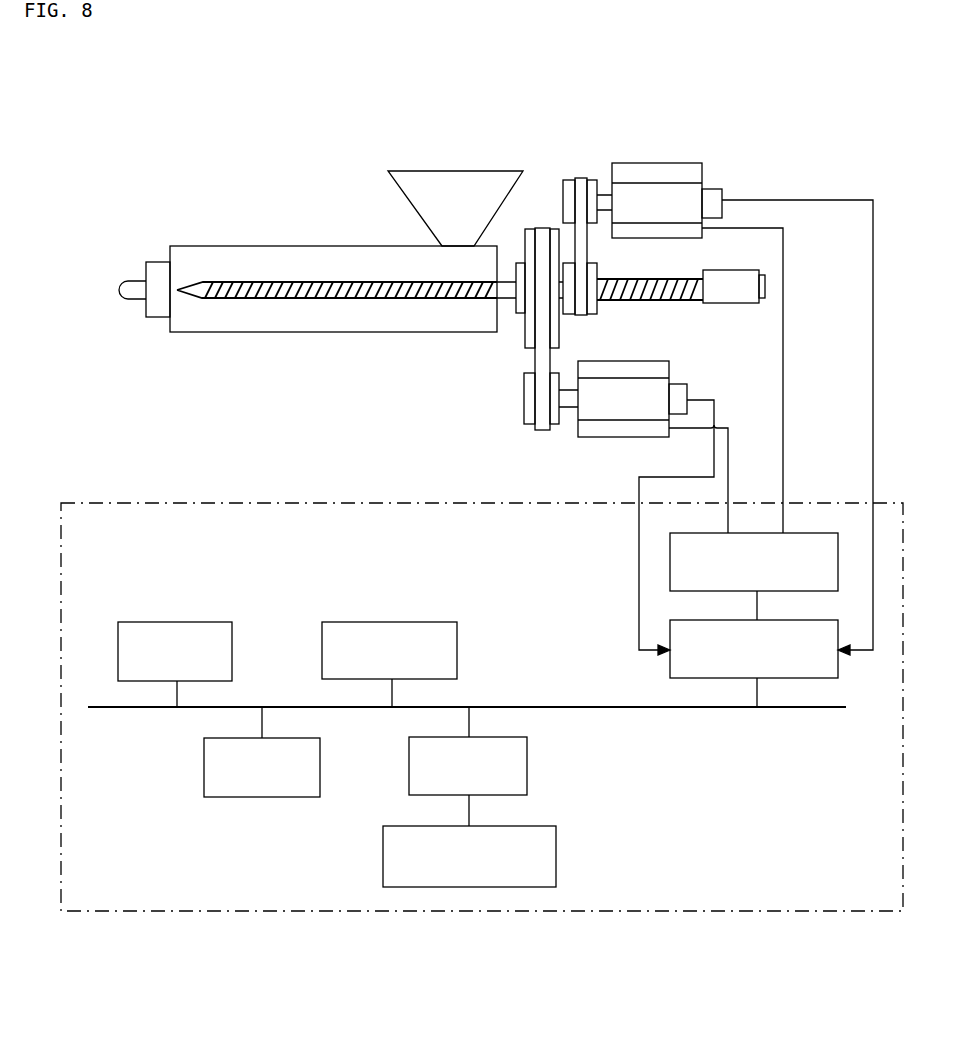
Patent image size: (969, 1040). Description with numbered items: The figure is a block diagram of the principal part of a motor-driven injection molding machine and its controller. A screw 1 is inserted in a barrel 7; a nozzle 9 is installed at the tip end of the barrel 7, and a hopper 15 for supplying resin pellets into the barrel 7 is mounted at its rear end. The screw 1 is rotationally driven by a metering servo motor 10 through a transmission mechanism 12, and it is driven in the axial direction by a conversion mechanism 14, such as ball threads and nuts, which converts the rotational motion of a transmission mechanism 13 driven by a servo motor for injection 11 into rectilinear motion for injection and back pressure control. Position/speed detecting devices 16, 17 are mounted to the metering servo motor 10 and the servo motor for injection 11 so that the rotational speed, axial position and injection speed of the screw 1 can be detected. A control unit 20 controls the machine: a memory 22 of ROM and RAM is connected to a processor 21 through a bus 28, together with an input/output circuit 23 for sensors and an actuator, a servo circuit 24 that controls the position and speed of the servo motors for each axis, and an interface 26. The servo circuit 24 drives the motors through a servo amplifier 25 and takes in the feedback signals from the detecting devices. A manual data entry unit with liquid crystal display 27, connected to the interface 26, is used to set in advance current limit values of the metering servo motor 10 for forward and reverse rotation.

The screw 1 is at (310, 298).
The barrel 7 is at (245, 250).
The nozzle 9 is at (140, 282).
The metering servo motor 10 is at (642, 367).
The servo motor for injection 11 is at (632, 167).
The transmission mechanism 12 is at (522, 372).
The transmission mechanism 13 is at (550, 194).
The conversion mechanism 14 is at (688, 266).
The hopper 15 is at (448, 177).
The position/speed detecting device 16 is at (688, 390).
The position/speed detecting device 17 is at (718, 190).
The control unit 20 is at (598, 912).
The processor 21 is at (245, 793).
The memory 22 is at (180, 626).
The input/output circuit 23 is at (455, 653).
The servo circuit 24 is at (670, 632).
The servo amplifier 25 is at (670, 556).
The interface 26 is at (527, 765).
The manual data entry unit with liquid crystal display 27 is at (556, 856).
The bus 28 is at (670, 708).